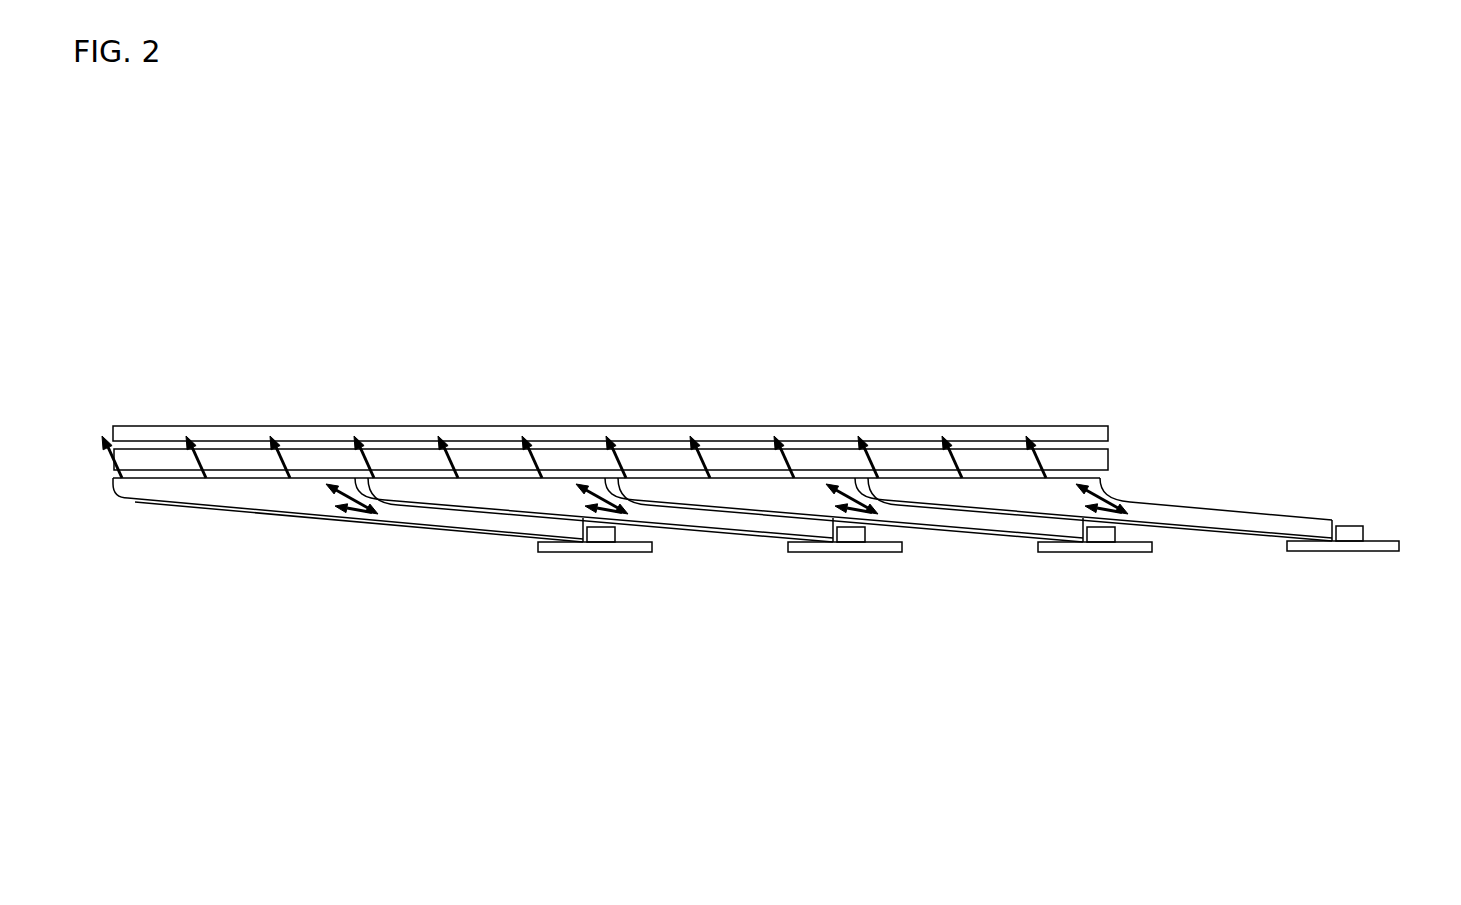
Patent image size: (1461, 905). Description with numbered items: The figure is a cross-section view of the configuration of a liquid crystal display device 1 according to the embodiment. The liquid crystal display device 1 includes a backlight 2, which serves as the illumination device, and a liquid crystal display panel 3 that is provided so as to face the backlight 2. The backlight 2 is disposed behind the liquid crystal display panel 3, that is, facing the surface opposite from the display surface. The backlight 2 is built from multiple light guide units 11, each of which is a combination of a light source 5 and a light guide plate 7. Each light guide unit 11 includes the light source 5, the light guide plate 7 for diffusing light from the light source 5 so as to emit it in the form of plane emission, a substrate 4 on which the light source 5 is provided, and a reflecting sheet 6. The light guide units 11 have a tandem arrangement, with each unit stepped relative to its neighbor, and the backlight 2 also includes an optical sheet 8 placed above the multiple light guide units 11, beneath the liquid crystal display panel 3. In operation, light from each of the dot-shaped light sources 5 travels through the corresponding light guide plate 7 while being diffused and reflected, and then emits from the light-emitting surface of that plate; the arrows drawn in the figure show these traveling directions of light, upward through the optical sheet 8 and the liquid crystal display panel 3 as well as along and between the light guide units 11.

The liquid crystal display device 1 is at (1107, 285).
The backlight 2 is at (1403, 445).
The liquid crystal display panel 3 is at (1108, 432).
The substrate 4 is at (554, 546).
The light source 5 is at (604, 538).
The reflecting sheet 6 is at (328, 521).
The light guide plate 7 is at (230, 500).
The optical sheet 8 is at (1108, 459).
The light guide unit 11 is at (208, 607).